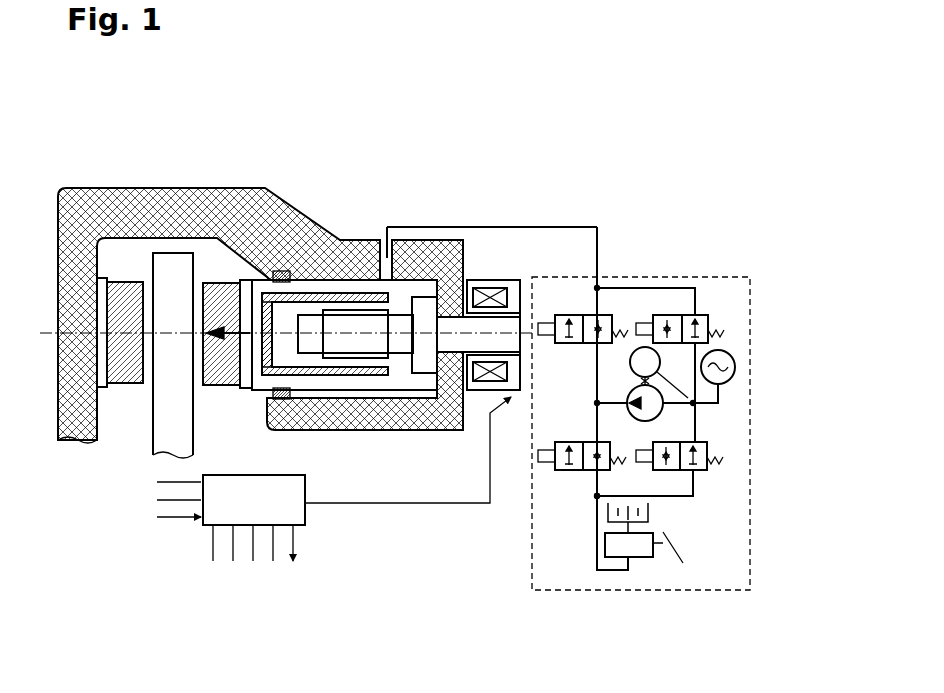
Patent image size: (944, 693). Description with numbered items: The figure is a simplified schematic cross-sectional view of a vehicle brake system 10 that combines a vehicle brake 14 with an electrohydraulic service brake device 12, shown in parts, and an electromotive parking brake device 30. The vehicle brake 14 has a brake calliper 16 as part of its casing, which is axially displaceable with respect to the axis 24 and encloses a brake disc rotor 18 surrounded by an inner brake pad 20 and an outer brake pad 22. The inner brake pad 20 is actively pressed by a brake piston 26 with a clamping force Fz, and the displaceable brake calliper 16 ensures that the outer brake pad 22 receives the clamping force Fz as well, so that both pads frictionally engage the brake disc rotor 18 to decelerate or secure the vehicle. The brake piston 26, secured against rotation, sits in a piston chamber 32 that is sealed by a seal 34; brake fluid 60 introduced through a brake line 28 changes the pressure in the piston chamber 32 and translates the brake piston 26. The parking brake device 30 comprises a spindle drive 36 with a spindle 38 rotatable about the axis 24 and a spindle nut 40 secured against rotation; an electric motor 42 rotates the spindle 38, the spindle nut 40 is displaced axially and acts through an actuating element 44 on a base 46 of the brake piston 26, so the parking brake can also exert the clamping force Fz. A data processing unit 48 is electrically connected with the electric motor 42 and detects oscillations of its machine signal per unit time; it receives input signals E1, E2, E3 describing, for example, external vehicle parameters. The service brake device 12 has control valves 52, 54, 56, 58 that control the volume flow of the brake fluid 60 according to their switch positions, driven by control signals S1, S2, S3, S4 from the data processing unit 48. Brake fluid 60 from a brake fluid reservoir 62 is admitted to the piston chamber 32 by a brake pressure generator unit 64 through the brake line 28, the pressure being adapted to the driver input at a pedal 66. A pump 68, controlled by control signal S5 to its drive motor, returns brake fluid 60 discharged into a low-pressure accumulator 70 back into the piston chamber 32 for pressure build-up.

The vehicle brake system 10 is at (640, 130).
The electrohydraulic service brake device 12 is at (668, 250).
The vehicle brake 14 is at (302, 238).
The brake calliper 16 is at (80, 200).
The brake disc rotor 18 is at (150, 452).
The inner brake pad 20 is at (221, 378).
The outer brake pad 22 is at (120, 378).
The axis 24 is at (181, 320).
The brake piston 26 is at (258, 380).
The brake line 28 is at (552, 225).
The electromotive parking brake device 30 is at (484, 240).
The piston chamber 32 is at (360, 288).
The seal 34 is at (276, 400).
The spindle drive 36 is at (400, 354).
The spindle 38 is at (373, 400).
The spindle nut 40 is at (370, 366).
The electric motor 42 is at (487, 390).
The actuating element 44 is at (281, 270).
The base 46 is at (275, 390).
The data processing unit 48 is at (305, 524).
The control valve 52 is at (702, 313).
The control valve 54 is at (600, 313).
The control valve 56 is at (707, 471).
The control valve 58 is at (585, 472).
The brake fluid 60 is at (595, 500).
The brake fluid reservoir 62 is at (650, 512).
The brake pressure generator unit 64 is at (637, 560).
The pedal 66 is at (684, 558).
The pump 68 is at (656, 418).
The low-pressure accumulator 70 is at (737, 363).
The clamping force Fz is at (236, 330).
The input signal E1 is at (157, 482).
The input signal E2 is at (157, 500).
The input signal E3 is at (157, 517).
The control signal S1 is at (660, 306).
The control signal S2 is at (562, 306).
The control signal S3 is at (661, 440).
The control signal S4 is at (560, 440).
The control signal S5 is at (700, 401).